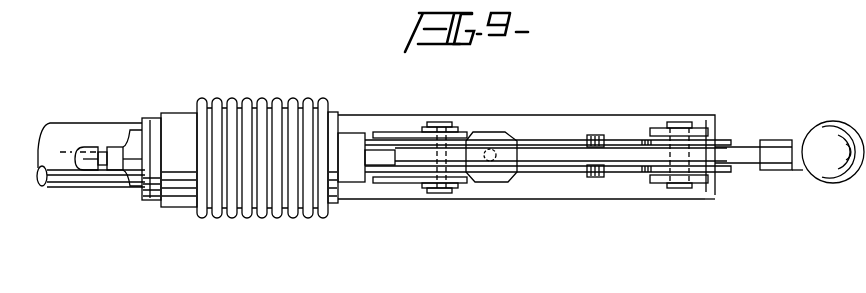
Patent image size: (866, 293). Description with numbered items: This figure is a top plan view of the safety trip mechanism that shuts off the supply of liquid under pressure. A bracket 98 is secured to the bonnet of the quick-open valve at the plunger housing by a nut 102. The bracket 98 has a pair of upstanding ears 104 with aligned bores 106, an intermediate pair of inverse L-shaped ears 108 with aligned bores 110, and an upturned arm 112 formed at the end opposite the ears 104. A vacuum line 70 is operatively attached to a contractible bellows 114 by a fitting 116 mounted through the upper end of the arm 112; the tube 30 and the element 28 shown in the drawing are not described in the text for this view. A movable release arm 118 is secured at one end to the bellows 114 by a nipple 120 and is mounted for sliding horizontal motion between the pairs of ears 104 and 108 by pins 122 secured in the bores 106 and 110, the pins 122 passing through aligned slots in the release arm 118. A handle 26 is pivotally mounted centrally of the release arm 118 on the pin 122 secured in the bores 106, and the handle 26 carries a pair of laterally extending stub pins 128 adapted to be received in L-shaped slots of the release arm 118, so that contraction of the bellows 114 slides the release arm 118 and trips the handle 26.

The handle 26 is at (745, 147).
The center rod 28 is at (488, 170).
The tube 30 is at (60, 136).
The vacuum line 70 is at (86, 171).
The bracket 98 is at (541, 185).
The nut 102 is at (501, 132).
The upstanding ears 104 is at (713, 165).
The bores 106 is at (683, 188).
The inverse L-shaped ears 108 is at (404, 177).
The bores 110 is at (447, 187).
The upturned arm 112 is at (149, 201).
The contractible bellows 114 is at (250, 121).
The fitting 116 is at (125, 132).
The release arm 118 is at (628, 165).
The nipple 120 is at (373, 158).
The pins 122 is at (440, 122).
The stub pins 128 is at (597, 180).